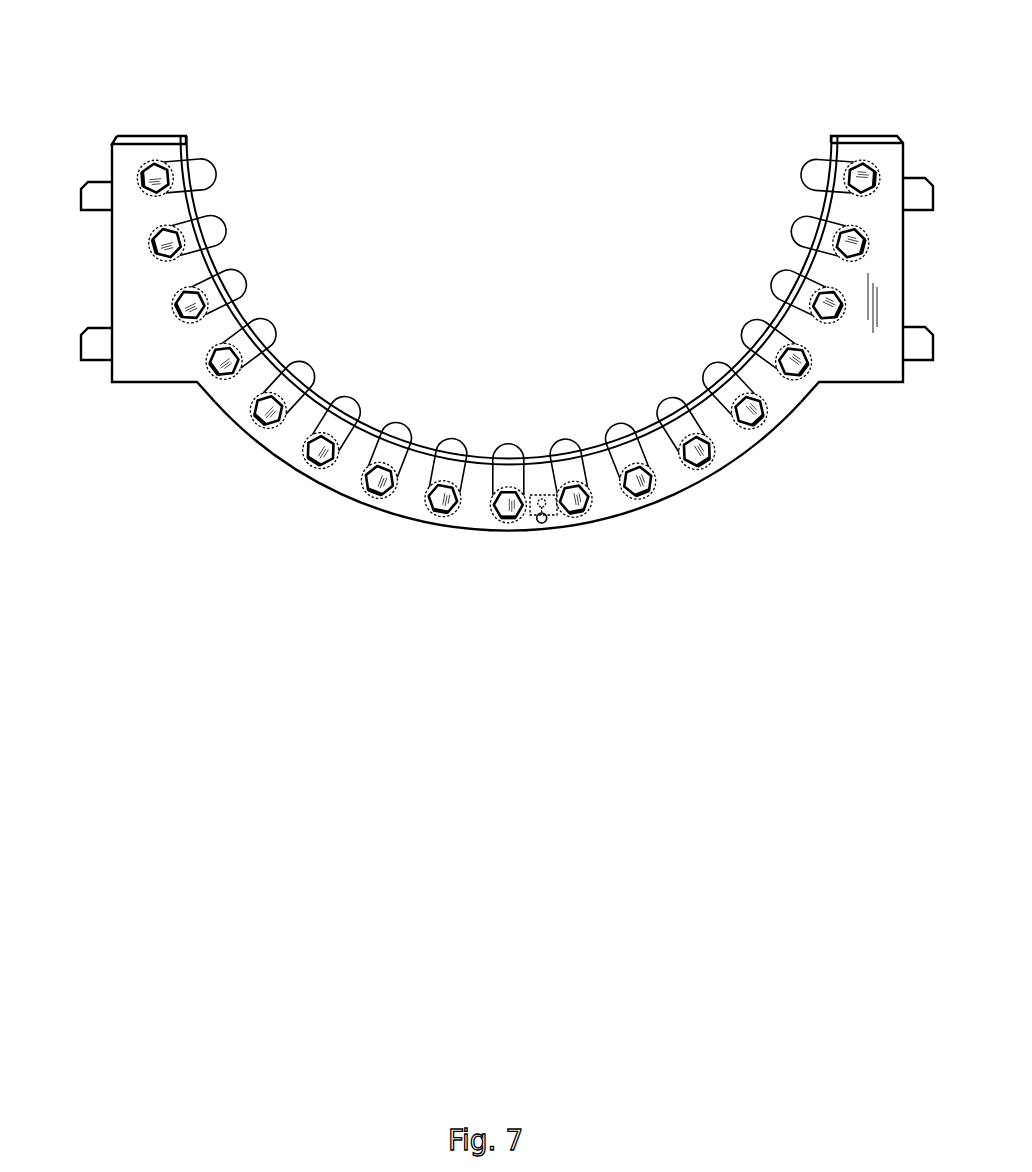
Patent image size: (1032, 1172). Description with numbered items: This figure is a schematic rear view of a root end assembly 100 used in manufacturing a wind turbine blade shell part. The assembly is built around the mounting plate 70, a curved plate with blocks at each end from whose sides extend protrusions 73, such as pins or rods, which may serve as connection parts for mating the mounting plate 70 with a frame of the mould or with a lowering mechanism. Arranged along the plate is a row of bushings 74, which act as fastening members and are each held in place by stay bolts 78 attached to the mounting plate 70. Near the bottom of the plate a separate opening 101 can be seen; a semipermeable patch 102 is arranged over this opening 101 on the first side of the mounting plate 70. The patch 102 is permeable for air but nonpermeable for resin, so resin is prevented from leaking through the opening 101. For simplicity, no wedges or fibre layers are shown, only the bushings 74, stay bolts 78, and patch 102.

The root end assembly 100 is at (90, 36).
The mounting plate 70 is at (133, 163).
The protrusions 73 is at (97, 350).
The bushings 74 is at (508, 448).
The stay bolts 78 is at (503, 515).
The opening 101 is at (542, 523).
The patch 102 is at (542, 495).